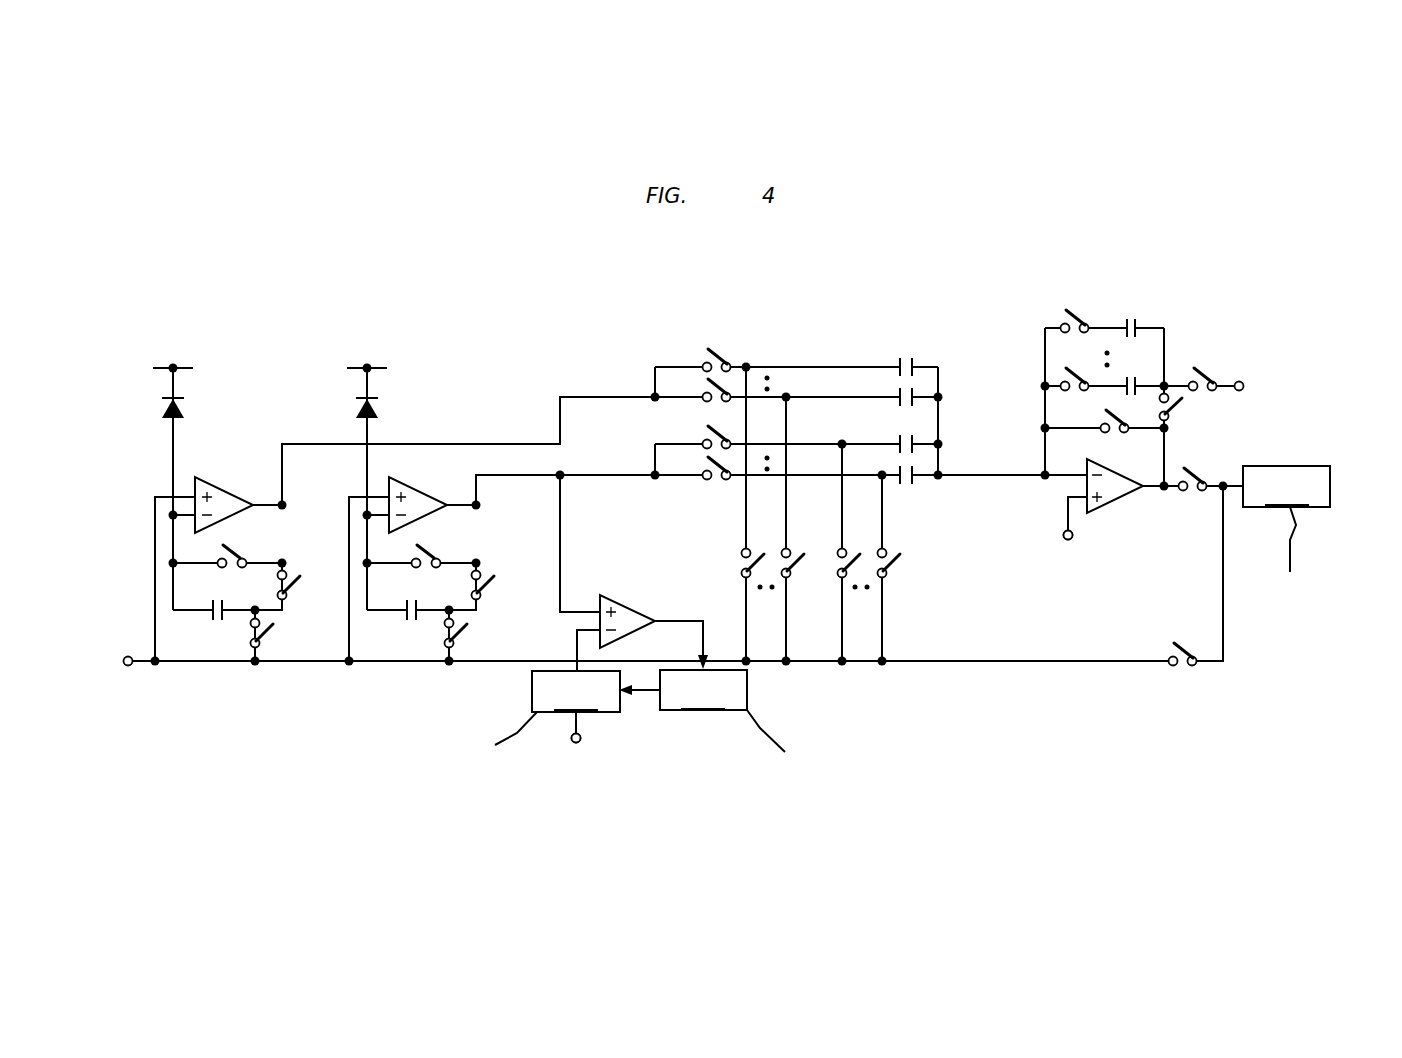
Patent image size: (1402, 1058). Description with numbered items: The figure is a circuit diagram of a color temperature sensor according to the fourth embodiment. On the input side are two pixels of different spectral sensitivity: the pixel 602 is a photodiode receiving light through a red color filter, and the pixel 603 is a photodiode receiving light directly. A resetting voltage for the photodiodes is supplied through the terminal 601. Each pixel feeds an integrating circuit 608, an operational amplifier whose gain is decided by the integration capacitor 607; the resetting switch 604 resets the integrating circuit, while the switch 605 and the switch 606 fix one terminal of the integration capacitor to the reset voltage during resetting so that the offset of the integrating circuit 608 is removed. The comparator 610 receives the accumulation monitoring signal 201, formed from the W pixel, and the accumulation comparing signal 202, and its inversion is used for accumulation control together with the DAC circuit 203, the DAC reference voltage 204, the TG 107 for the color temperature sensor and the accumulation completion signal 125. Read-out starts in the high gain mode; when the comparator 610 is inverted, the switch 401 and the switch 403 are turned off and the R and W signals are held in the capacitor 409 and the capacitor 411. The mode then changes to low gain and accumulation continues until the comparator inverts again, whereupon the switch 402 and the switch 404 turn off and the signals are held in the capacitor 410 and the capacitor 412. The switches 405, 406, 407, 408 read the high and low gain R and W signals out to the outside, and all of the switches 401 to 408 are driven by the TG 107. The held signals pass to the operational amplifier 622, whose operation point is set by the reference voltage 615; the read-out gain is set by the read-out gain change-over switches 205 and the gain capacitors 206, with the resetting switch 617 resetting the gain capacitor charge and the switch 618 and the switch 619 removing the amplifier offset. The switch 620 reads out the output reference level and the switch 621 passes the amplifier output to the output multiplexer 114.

The output multiplexer 114 is at (1312, 531).
The TG for the color temperature sensor 107 is at (805, 723).
The color temperature sensor accumulation completion signal 125 is at (703, 620).
The accumulation monitoring signal 201 is at (583, 611).
The accumulation comparing signal 202 is at (577, 630).
The DAC circuit 203 is at (540, 719).
The DAC reference voltage 204 is at (581, 742).
The read-out gain change-over switches 205 is at (1062, 373).
The gain capacitors 206 is at (1140, 375).
The switch 401 is at (702, 352).
The switch 402 is at (702, 382).
The switch 403 is at (702, 432).
The switch 404 is at (702, 462).
The switch 405 is at (742, 560).
The switch 406 is at (797, 566).
The switch 407 is at (858, 548).
The switch 408 is at (898, 567).
The capacitor 409 is at (917, 358).
The capacitor 410 is at (918, 390).
The capacitor 411 is at (918, 440).
The capacitor 412 is at (918, 470).
The terminal 601 is at (122, 661).
The pixel 602 is at (166, 405).
The pixel 603 is at (360, 405).
The resetting switch 604 is at (216, 548).
The switch 605 is at (274, 634).
The switch 606 is at (300, 580).
The integration capacitor 607 is at (212, 620).
The integrating circuit 608 is at (228, 481).
The comparator 610 is at (636, 597).
The reference voltage 615 is at (1066, 542).
The resetting switch 617 is at (1118, 437).
The switch 618 is at (1183, 410).
The switch 619 is at (1204, 368).
The switch 620 is at (1172, 642).
The switch 621 is at (1193, 493).
The operational amplifier 622 is at (1119, 502).